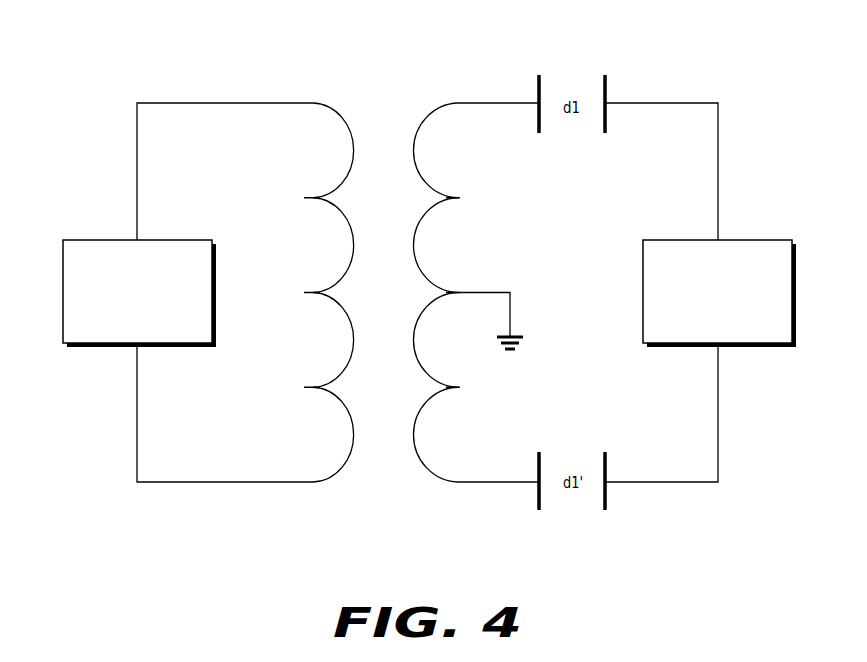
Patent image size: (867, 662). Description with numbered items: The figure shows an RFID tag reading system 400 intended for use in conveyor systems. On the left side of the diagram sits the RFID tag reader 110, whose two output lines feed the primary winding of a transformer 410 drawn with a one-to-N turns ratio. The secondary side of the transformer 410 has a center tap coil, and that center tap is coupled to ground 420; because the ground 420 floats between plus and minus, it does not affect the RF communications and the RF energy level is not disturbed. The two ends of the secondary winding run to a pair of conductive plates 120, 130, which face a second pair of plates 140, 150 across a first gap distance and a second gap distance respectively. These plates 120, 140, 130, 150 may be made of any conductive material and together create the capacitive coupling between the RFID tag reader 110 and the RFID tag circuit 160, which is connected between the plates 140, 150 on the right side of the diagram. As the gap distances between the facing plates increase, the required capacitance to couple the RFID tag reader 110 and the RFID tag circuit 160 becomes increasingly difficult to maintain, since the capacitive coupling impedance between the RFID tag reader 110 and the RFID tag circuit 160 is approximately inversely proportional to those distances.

The RFID tag reading system 400 is at (152, 55).
The RFID tag reader 110 is at (63, 257).
The plate 120 is at (539, 80).
The plate 130 is at (539, 500).
The plate 140 is at (605, 80).
The plate 150 is at (605, 500).
The RFID tag circuit 160 is at (797, 258).
The transformer 410 is at (402, 112).
The ground 420 is at (518, 334).